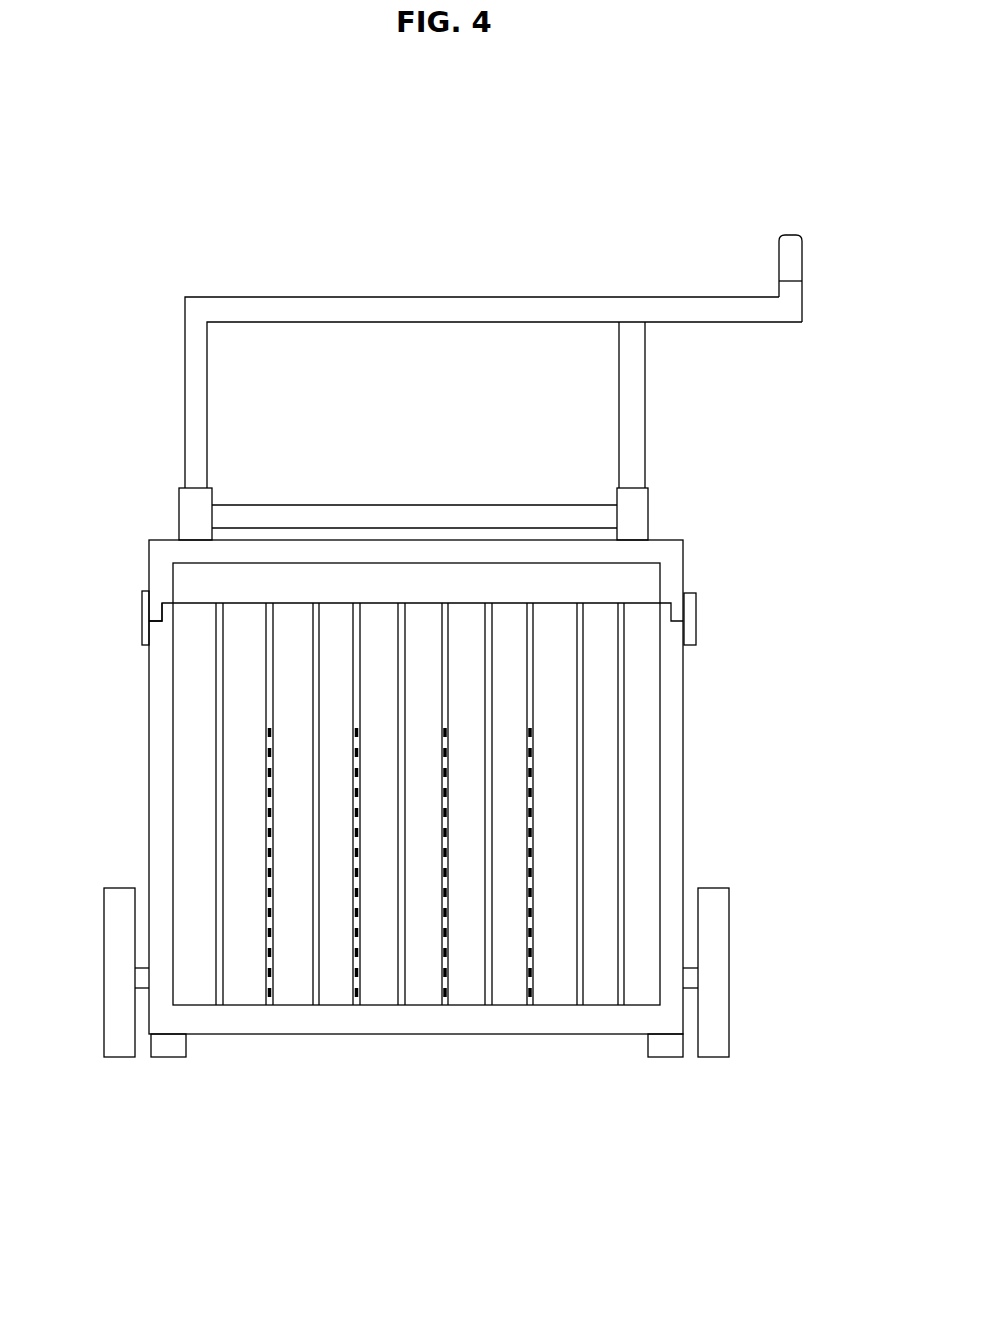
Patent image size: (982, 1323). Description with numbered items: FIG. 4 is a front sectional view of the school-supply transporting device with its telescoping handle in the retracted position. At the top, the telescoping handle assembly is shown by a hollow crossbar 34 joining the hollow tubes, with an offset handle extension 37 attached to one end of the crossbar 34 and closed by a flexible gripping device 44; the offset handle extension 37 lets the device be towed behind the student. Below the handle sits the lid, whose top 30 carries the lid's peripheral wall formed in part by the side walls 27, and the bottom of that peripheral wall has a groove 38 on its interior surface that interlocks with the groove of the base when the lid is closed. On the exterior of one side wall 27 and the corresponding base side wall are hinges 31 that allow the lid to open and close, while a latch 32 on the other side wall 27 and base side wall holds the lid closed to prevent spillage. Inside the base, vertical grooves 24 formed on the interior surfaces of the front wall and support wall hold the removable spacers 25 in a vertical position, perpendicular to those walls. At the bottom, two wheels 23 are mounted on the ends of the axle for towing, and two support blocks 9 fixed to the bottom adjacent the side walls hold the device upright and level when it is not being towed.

The support block 9 is at (664, 1060).
The wheel 23 is at (738, 1055).
The vertical groove 24 is at (203, 747).
The removable spacer 25 is at (262, 983).
The side wall of the lid 27 is at (687, 573).
The top of the lid 30 is at (272, 540).
The hinge 31 is at (135, 617).
The latch 32 is at (702, 619).
The hollow crossbar 34 is at (527, 295).
The offset handle extension 37 is at (734, 322).
The groove of the lid 38 is at (168, 598).
The flexible gripping device 44 is at (810, 258).